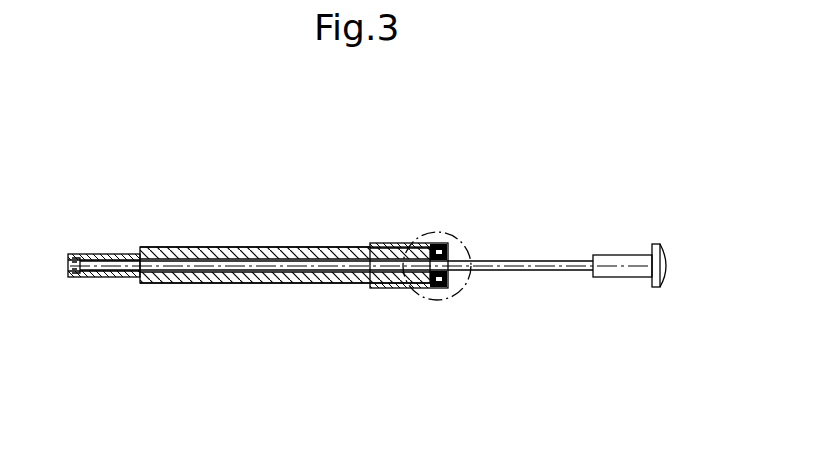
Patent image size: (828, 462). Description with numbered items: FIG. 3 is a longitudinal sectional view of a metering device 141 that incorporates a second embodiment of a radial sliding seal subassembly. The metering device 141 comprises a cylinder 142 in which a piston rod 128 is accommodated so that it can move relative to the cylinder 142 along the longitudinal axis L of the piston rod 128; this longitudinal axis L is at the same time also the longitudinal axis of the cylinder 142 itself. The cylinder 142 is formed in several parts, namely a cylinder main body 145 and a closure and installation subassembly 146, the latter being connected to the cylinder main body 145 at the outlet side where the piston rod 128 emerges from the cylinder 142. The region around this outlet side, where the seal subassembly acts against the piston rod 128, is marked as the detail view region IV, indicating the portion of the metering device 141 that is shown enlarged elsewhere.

The metering device 141 is at (367, 264).
The cylinder 142 is at (333, 240).
The cylinder main body 145 is at (220, 284).
The closure and installation subassembly 146 is at (397, 293).
The piston rod 128 is at (518, 271).
The longitudinal axis L is at (618, 267).
The detail view region IV is at (453, 237).